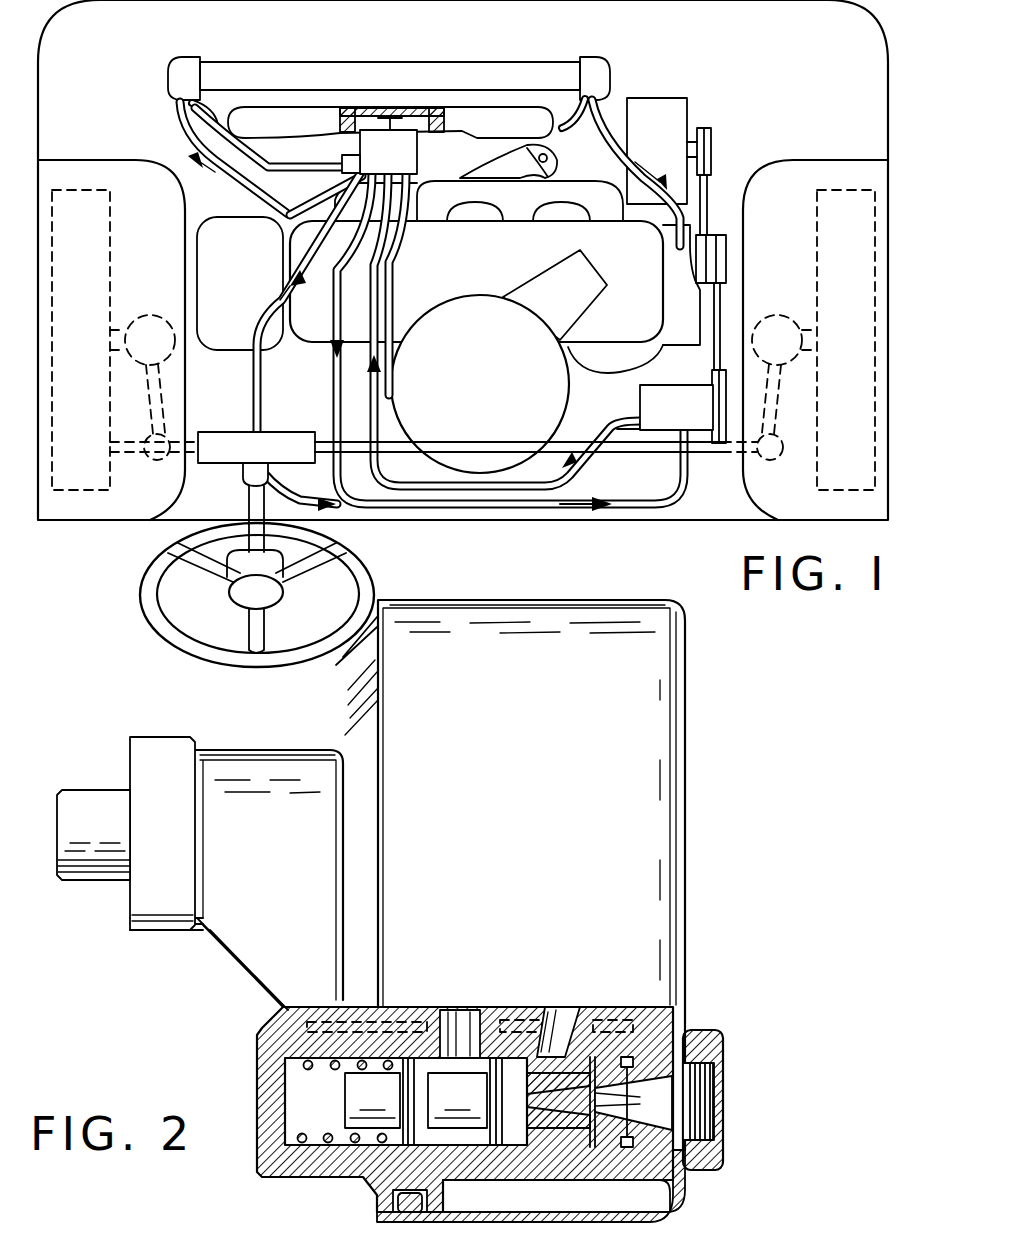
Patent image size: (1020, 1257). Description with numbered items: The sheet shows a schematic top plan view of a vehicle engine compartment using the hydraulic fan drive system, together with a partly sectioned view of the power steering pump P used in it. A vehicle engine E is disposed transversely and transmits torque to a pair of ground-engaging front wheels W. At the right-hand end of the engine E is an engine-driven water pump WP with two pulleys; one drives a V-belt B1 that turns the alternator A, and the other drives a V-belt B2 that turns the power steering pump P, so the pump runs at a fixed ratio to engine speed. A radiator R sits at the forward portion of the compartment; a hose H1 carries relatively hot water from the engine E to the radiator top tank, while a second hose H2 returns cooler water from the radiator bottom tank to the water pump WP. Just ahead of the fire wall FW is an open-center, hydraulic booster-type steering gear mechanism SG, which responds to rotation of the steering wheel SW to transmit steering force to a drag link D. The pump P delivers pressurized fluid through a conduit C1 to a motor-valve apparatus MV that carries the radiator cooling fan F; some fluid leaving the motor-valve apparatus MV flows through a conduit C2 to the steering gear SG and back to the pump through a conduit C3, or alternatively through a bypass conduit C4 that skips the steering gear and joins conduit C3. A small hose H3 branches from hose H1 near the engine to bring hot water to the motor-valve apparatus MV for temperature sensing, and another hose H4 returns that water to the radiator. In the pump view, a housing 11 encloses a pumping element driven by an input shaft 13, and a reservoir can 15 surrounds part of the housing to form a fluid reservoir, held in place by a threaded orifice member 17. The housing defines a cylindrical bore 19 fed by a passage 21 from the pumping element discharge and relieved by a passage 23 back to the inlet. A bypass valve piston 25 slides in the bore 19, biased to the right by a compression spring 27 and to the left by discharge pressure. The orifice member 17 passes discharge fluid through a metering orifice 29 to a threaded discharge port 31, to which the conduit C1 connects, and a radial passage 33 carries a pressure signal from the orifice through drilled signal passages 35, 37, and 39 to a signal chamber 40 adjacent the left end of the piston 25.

In FIG. 1, the radiator R is at (300, 82).
In FIG. 1, the radiator cooling fan F is at (485, 118).
In FIG. 1, the alternator A is at (665, 127).
In FIG. 1, the hose H1 is at (250, 185).
In FIG. 1, the second hose H2 is at (622, 150).
In FIG. 1, the small hose H3 is at (330, 190).
In FIG. 1, the hose H4 is at (320, 162).
In FIG. 1, the motor-valve apparatus MV is at (398, 155).
In FIG. 1, the V-belt B1 is at (705, 198).
In FIG. 1, the V-belt B2 is at (716, 335).
In FIG. 1, the front wheels W is at (88, 272).
In FIG. 1, the vehicle engine E is at (476, 327).
In FIG. 1, the water pump WP is at (688, 290).
In FIG. 1, the conduit C1 is at (378, 318).
In FIG. 1, the conduit C2 is at (268, 303).
In FIG. 1, the conduit C3 is at (406, 506).
In FIG. 1, the conduit C4 is at (335, 378).
In FIG. 1, the steering gear mechanism SG is at (218, 452).
In FIG. 1, the power steering pump P is at (660, 400).
In FIG. 2, the power steering pump P is at (690, 718).
In FIG. 1, the drag link D is at (640, 448).
In FIG. 1, the fire wall FW is at (603, 510).
In FIG. 1, the steering wheel SW is at (152, 595).
In FIG. 2, the housing 11 is at (264, 768).
In FIG. 2, the input shaft 13 is at (97, 805).
In FIG. 2, the reservoir can 15 is at (655, 870).
In FIG. 2, the threaded orifice member 17 is at (733, 1077).
In FIG. 2, the cylindrical bore 19 is at (290, 1085).
In FIG. 2, the passage 21 is at (558, 1030).
In FIG. 2, the passage 23 is at (466, 1022).
In FIG. 2, the bypass valve piston 25 is at (470, 1115).
In FIG. 2, the compression spring 27 is at (340, 1140).
In FIG. 2, the metering orifice 29 is at (610, 1110).
In FIG. 2, the threaded discharge port 31 is at (718, 1122).
In FIG. 2, the radial passage 33 is at (585, 1098).
In FIG. 2, the drilled signal passage 35 is at (635, 1025).
In FIG. 2, the drilled signal passage 37 is at (518, 1025).
In FIG. 2, the drilled signal passage 39 is at (308, 1040).
In FIG. 2, the signal chamber 40 is at (406, 1101).